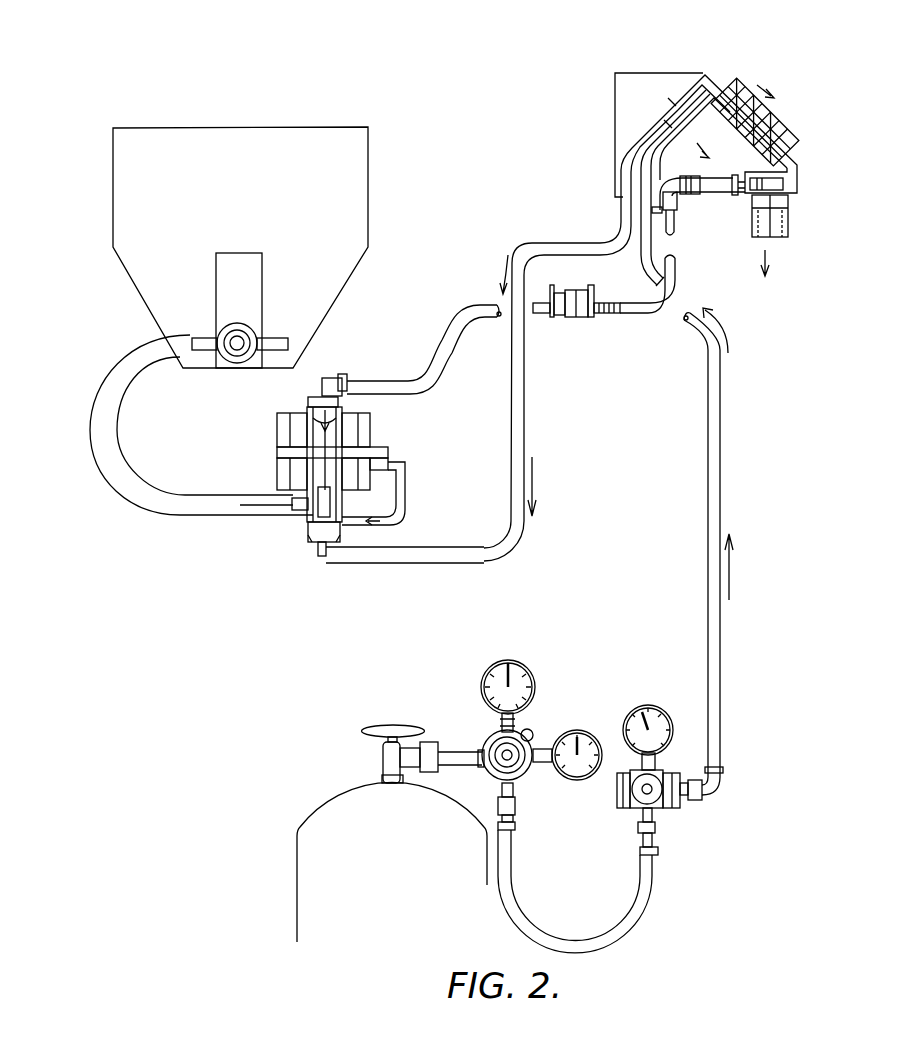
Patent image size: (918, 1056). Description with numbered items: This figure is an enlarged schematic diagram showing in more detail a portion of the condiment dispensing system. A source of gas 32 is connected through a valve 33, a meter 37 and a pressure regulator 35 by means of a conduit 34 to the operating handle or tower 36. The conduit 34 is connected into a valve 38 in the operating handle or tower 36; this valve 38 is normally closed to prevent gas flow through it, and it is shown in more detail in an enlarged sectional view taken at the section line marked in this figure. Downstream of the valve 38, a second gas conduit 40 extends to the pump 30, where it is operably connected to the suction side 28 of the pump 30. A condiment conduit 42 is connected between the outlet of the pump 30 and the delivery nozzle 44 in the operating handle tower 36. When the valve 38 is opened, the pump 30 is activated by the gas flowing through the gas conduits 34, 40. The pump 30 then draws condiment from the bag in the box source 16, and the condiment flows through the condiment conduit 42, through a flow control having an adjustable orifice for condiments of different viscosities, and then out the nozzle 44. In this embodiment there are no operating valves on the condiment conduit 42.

The bag in the box source 16 is at (301, 243).
The suction side 28 is at (315, 545).
The pump 30 is at (372, 440).
The source of gas 32 is at (297, 857).
The valve 33 is at (407, 725).
The conduit 34 is at (722, 678).
The pressure regulator 35 is at (665, 823).
The operating handle or tower 36 is at (725, 49).
The meter 37 is at (532, 727).
The valve 38 is at (735, 87).
The conduit 40 is at (545, 245).
The condiment conduit 42 is at (481, 320).
The delivery nozzle 44 is at (788, 228).